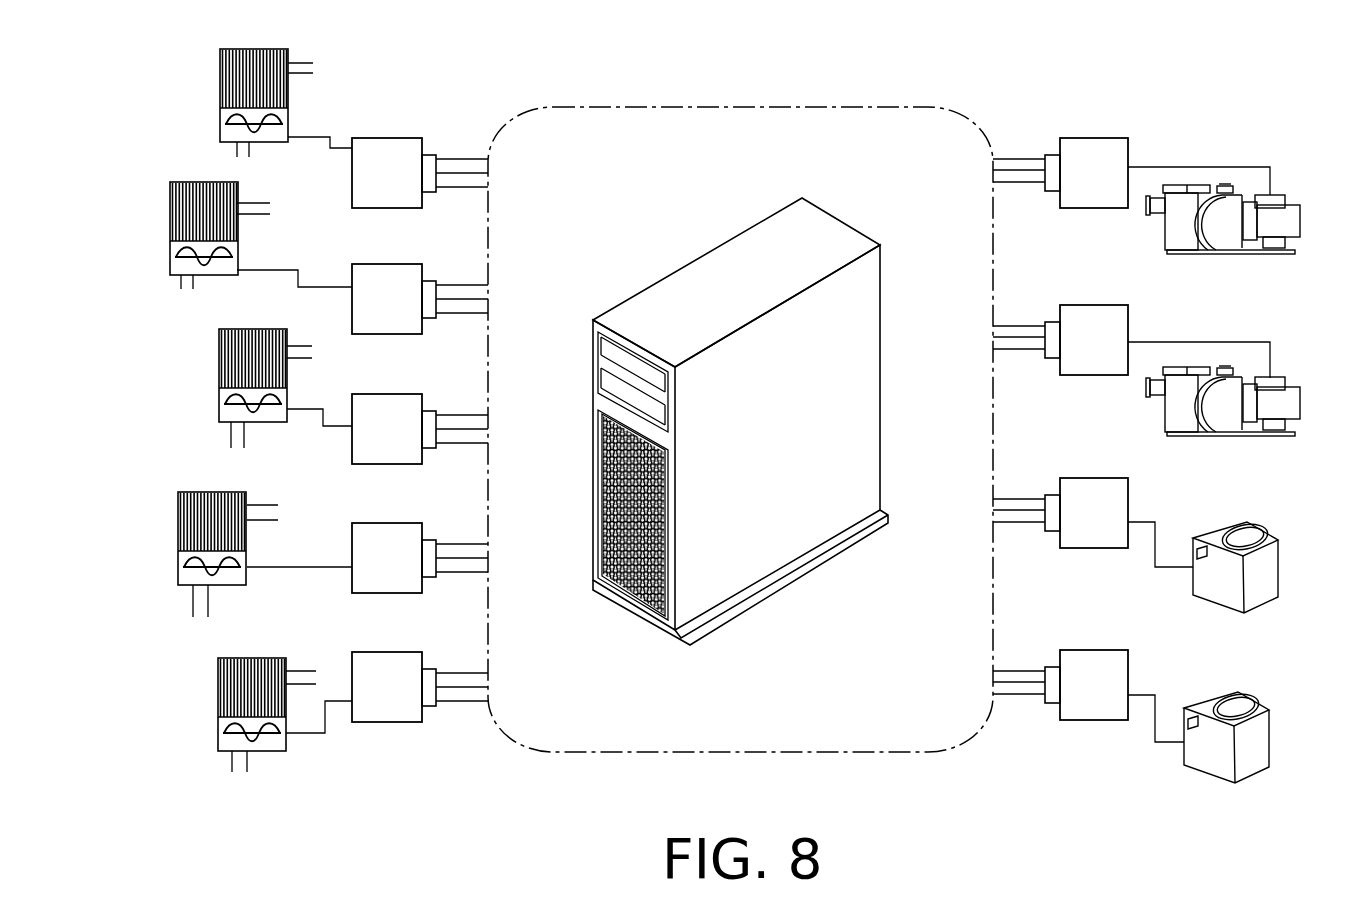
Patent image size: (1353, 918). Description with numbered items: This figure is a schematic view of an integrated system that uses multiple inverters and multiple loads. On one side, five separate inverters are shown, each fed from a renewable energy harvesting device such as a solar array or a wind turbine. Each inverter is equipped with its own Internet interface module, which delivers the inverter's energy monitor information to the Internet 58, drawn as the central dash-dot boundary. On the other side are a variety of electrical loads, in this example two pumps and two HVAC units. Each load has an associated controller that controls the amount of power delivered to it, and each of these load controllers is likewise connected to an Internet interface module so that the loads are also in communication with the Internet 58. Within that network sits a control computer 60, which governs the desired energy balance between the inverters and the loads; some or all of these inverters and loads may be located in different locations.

The Internet 58 is at (763, 107).
The control computer 60 is at (747, 283).